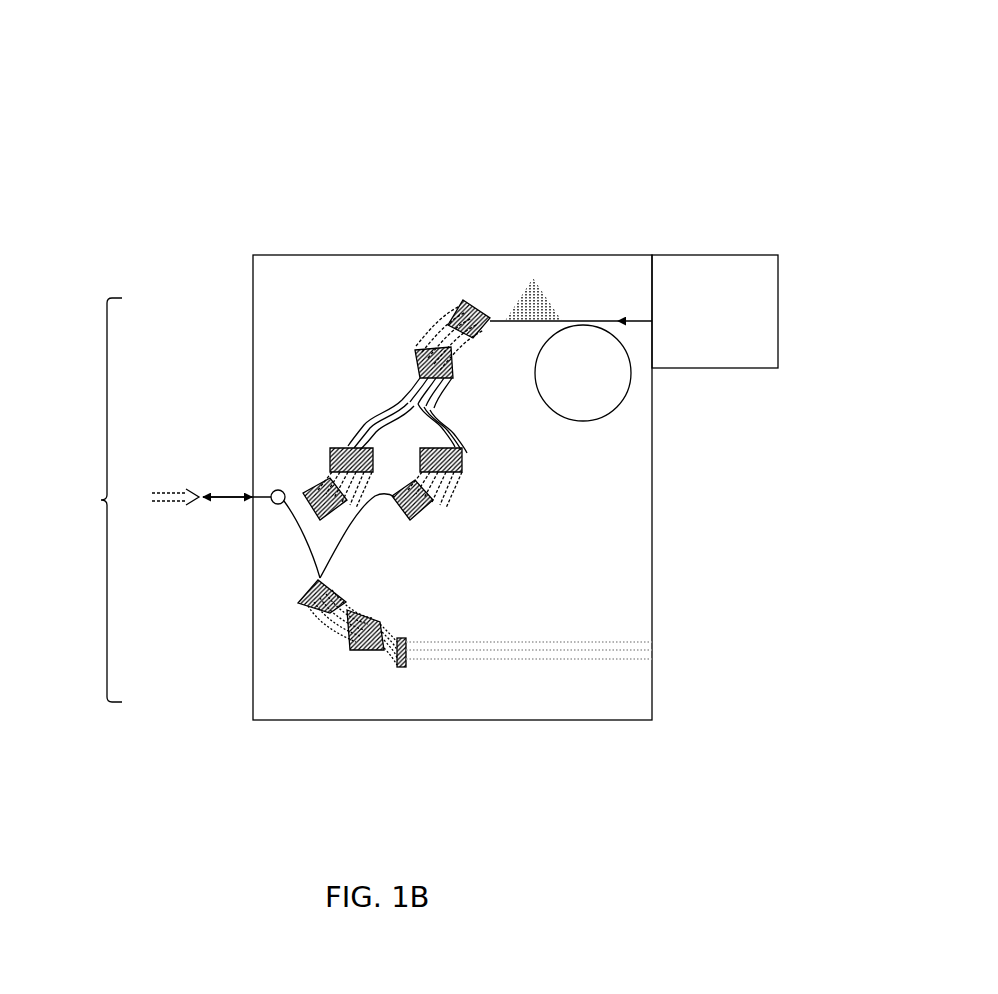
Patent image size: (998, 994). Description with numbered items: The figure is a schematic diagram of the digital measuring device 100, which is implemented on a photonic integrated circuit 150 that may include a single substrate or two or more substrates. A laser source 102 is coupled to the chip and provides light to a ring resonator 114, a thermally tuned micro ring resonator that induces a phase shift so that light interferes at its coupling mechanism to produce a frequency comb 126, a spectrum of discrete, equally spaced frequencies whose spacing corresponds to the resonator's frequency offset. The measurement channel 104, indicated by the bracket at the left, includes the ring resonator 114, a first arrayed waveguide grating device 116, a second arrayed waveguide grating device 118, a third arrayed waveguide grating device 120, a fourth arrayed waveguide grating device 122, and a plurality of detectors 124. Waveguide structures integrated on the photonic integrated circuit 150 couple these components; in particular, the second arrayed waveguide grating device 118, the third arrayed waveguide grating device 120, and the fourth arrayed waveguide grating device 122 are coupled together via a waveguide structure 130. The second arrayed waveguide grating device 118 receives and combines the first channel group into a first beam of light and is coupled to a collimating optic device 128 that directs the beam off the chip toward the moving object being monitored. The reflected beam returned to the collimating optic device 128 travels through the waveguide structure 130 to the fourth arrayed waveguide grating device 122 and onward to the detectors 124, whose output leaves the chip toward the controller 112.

The digital measuring device 100 is at (869, 117).
The laser source 102 is at (715, 311).
The measurement channel 104 is at (76, 500).
The controller 112 is at (660, 650).
The ring resonator 114 is at (583, 373).
The first arrayed waveguide grating device 116 is at (424, 315).
The second arrayed waveguide grating device 118 is at (348, 460).
The third arrayed waveguide grating device 120 is at (451, 462).
The fourth arrayed waveguide grating device 122 is at (316, 627).
The detectors 124 is at (517, 660).
The frequency comb 126 is at (537, 285).
The collimating optic device 128 is at (215, 484).
The waveguide structure 130 is at (304, 557).
The photonic integrated circuit 150 is at (391, 255).